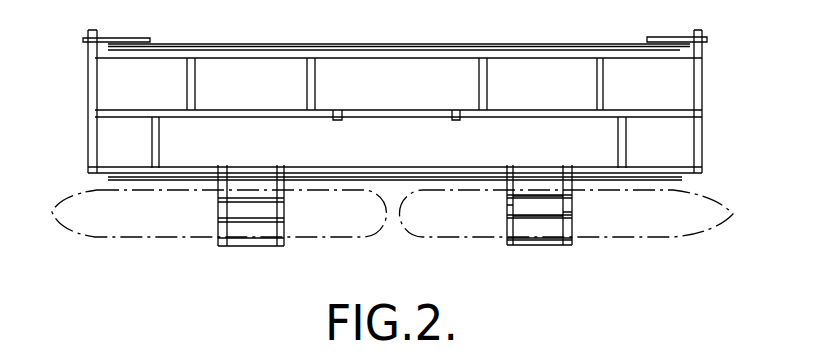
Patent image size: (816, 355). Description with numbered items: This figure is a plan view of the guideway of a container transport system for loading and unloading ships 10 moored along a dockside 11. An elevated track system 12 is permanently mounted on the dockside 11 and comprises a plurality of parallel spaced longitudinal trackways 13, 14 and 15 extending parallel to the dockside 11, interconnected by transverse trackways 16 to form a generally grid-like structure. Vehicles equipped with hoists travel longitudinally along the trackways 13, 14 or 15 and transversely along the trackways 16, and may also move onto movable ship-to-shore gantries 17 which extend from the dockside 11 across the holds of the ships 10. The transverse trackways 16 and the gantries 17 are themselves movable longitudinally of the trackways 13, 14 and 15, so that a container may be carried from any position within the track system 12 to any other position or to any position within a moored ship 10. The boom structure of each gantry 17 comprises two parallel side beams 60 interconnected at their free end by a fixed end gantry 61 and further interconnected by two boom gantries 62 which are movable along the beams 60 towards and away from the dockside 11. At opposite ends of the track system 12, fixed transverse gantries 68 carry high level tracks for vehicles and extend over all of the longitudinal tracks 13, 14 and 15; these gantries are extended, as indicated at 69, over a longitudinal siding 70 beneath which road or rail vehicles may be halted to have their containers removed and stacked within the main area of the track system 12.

The ship 10 is at (355, 239).
The dockside 11 is at (663, 178).
The track system 12 is at (412, 44).
The longitudinal trackway 13 is at (284, 57).
The longitudinal trackway 14 is at (272, 112).
The longitudinal trackway 15 is at (238, 170).
The transverse trackway 16 is at (193, 86).
The ship-to-shore gantry 17 is at (224, 211).
The side beam 60 is at (507, 207).
The fixed end gantry 61 is at (527, 240).
The boom gantry 62 is at (536, 196).
The transverse gantry 68 is at (89, 86).
The transverse gantry extension 69 is at (98, 34).
The longitudinal siding 70 is at (150, 40).